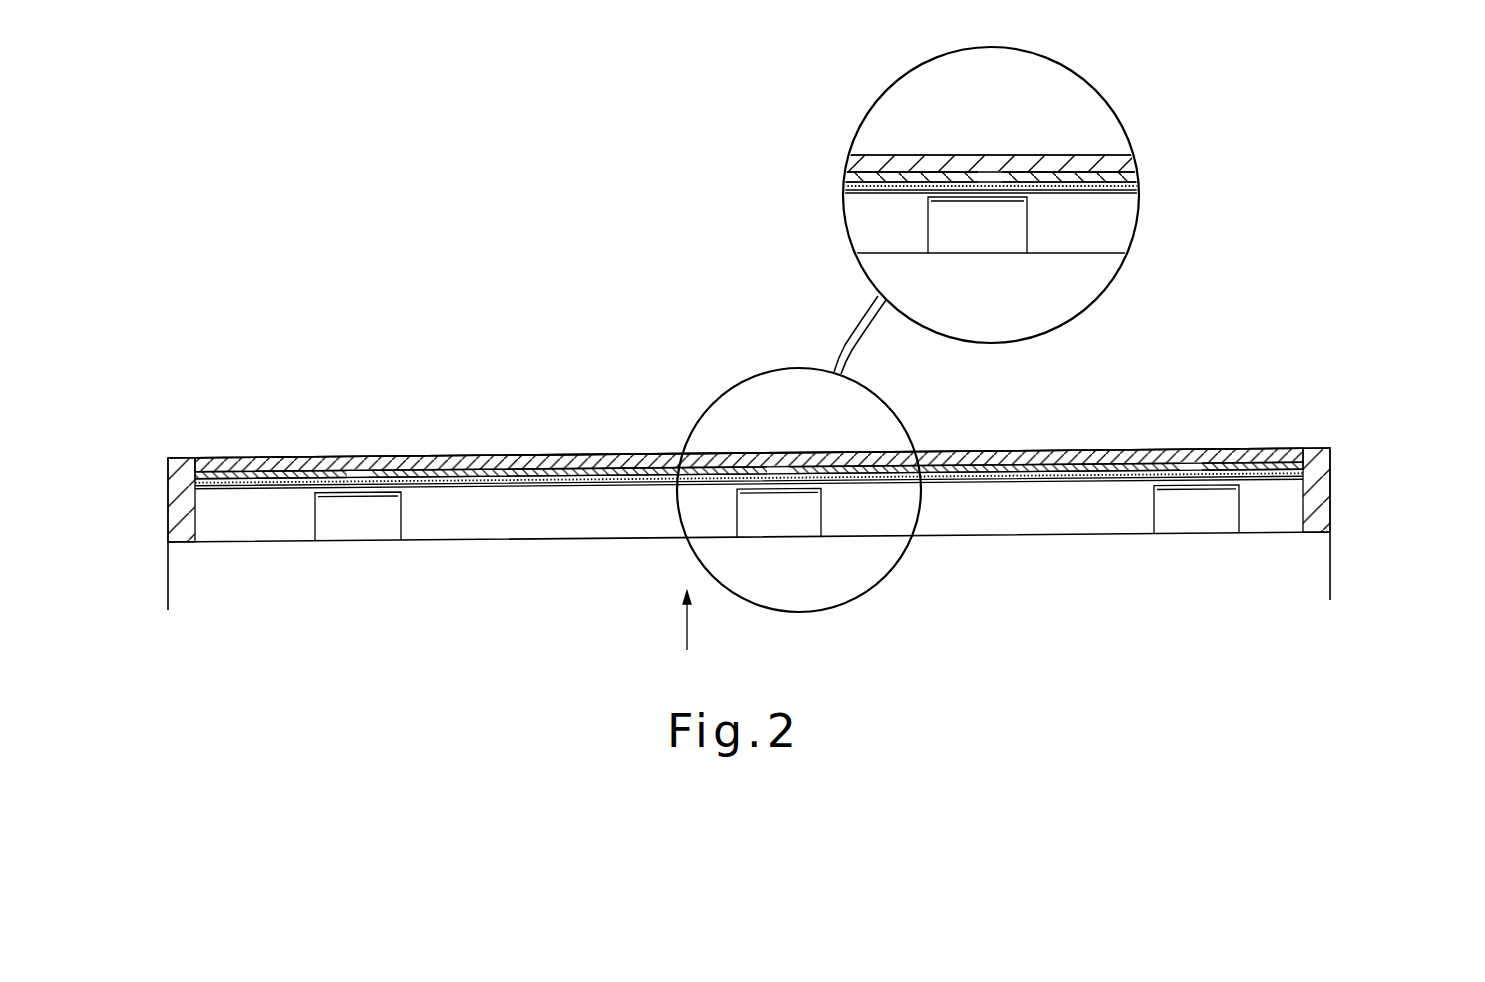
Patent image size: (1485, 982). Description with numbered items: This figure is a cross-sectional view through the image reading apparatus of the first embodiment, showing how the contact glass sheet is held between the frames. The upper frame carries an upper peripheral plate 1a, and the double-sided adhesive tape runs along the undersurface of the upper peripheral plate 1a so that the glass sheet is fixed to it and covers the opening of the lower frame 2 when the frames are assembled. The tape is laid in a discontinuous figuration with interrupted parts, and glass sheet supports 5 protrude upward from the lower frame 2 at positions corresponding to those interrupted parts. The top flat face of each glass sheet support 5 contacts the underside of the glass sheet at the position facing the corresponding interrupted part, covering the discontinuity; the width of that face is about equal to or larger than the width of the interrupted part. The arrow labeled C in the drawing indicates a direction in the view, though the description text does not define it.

The upper peripheral plate 1a is at (433, 460).
The lower frame 2 is at (1332, 567).
The glass sheet support 5 is at (348, 532).
The direction C is at (672, 620).